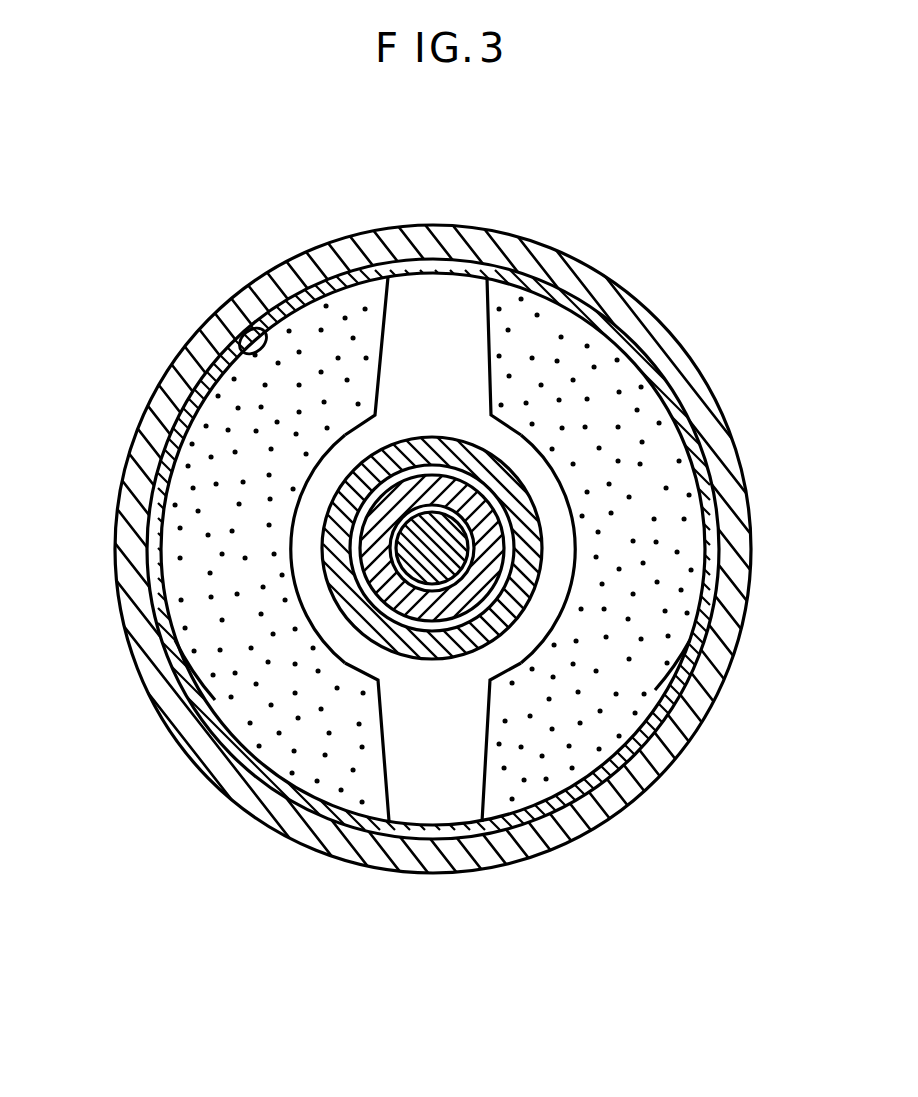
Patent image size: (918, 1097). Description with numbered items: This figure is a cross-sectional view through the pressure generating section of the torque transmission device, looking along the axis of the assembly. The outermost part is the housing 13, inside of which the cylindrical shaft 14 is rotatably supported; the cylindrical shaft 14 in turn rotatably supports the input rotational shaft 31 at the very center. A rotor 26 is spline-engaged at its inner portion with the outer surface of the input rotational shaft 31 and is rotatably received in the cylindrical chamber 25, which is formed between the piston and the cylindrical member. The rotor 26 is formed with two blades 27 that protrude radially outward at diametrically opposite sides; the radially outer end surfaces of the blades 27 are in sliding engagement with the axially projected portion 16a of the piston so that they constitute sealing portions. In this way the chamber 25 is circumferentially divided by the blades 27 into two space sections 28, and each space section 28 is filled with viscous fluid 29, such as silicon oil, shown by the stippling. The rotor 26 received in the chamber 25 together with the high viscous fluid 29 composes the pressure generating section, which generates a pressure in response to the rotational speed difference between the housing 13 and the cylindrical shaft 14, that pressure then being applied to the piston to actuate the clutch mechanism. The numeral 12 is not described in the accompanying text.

The shaft 12 is at (442, 562).
The housing 13 is at (620, 317).
The cylindrical shaft 14 is at (378, 515).
The axially projected portion 16a is at (524, 290).
The cylindrical chamber 25 is at (238, 338).
The rotor 26 is at (323, 623).
The blades 27 is at (452, 284).
The space sections 28 is at (176, 504).
The viscous fluid 29 is at (198, 663).
The input rotational shaft 31 is at (510, 500).